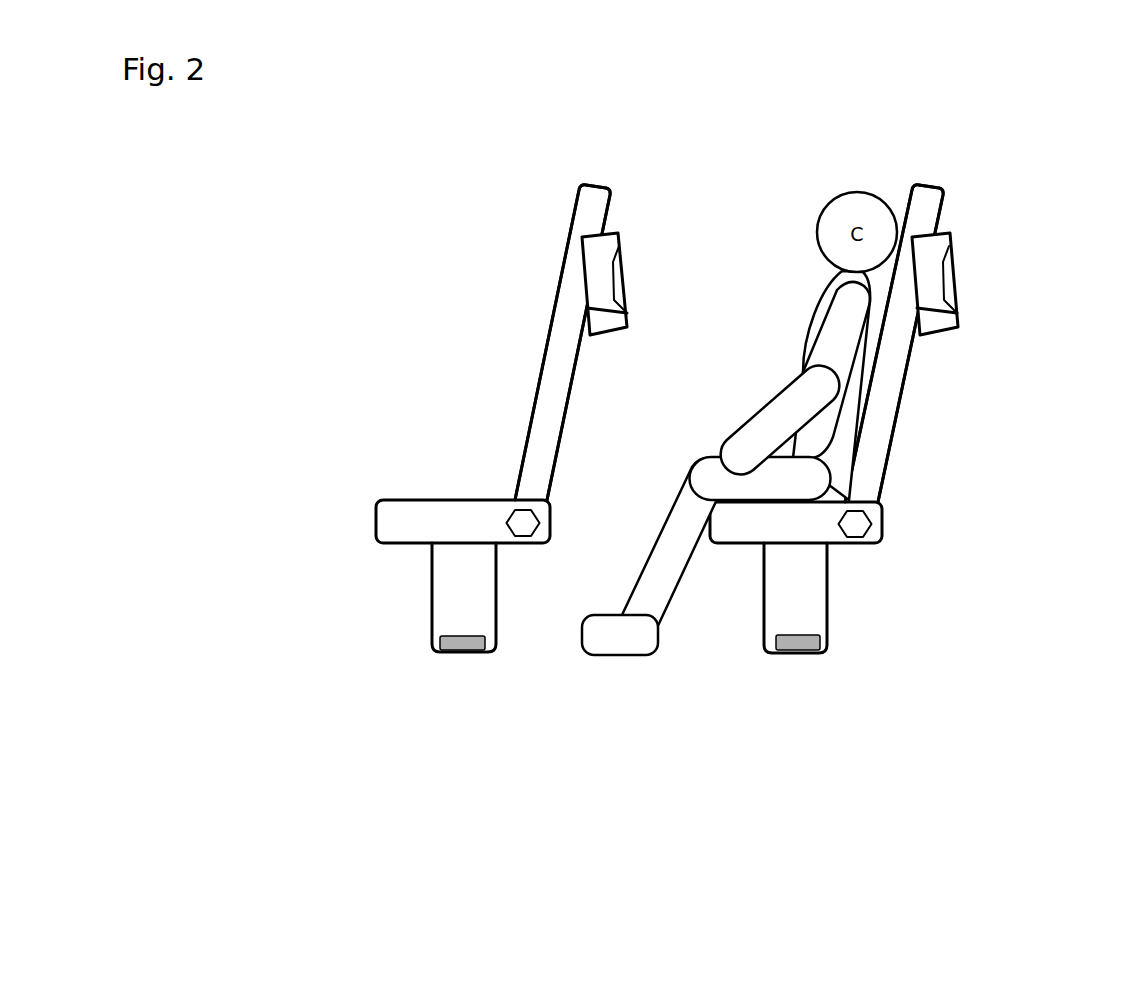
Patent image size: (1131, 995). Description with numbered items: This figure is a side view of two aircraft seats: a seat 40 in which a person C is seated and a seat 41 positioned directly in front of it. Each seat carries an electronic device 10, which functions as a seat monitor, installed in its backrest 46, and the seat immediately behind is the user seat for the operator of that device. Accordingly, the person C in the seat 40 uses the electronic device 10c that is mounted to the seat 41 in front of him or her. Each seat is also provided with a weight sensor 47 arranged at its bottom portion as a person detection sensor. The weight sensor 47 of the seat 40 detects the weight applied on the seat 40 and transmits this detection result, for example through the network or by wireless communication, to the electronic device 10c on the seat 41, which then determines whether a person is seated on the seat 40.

The electronic device 10 is at (953, 240).
The electronic device 10c is at (620, 240).
The seat 40 is at (937, 538).
The seat 41 is at (437, 388).
The backrest 46 is at (565, 421).
The weight sensor 47 is at (458, 643).